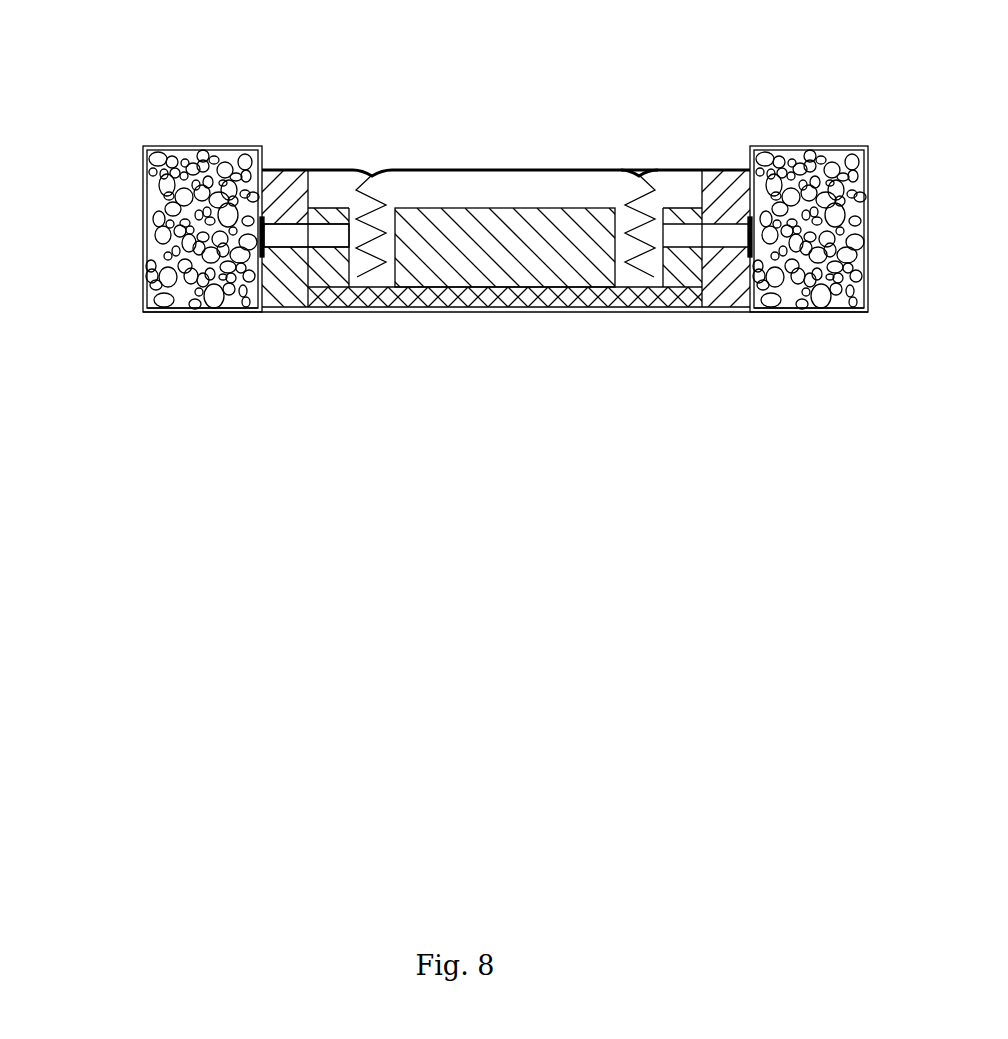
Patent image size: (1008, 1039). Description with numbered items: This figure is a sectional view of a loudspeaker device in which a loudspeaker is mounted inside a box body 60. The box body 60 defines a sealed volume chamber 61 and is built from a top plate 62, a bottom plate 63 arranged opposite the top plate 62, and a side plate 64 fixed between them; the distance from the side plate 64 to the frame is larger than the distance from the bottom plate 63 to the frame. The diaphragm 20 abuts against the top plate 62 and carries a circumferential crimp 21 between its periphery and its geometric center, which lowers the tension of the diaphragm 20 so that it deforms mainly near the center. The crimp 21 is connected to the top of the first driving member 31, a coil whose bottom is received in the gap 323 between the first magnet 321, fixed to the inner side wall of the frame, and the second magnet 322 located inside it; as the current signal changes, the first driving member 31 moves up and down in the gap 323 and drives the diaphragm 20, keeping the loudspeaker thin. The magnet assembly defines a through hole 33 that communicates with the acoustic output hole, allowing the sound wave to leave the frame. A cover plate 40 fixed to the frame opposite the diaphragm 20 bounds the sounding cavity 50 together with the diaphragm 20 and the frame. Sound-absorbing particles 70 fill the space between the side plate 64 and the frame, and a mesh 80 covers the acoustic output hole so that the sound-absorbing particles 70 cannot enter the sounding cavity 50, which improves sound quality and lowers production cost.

The diaphragm 20 is at (513, 170).
The crimp 21 is at (637, 177).
The first driving member 31 is at (392, 256).
The through hole 33 is at (328, 238).
The cover plate 40 is at (623, 292).
The sounding cavity 50 is at (675, 188).
The box body 60 is at (87, 193).
The sealed volume chamber 61 is at (868, 270).
The top plate 62 is at (150, 199).
The bottom plate 63 is at (170, 312).
The side plate 64 is at (142, 258).
The sound-absorbing particles 70 is at (808, 310).
The mesh 80 is at (232, 302).
The first magnet 321 is at (335, 288).
The second magnet 322 is at (516, 292).
The gap 323 is at (432, 265).